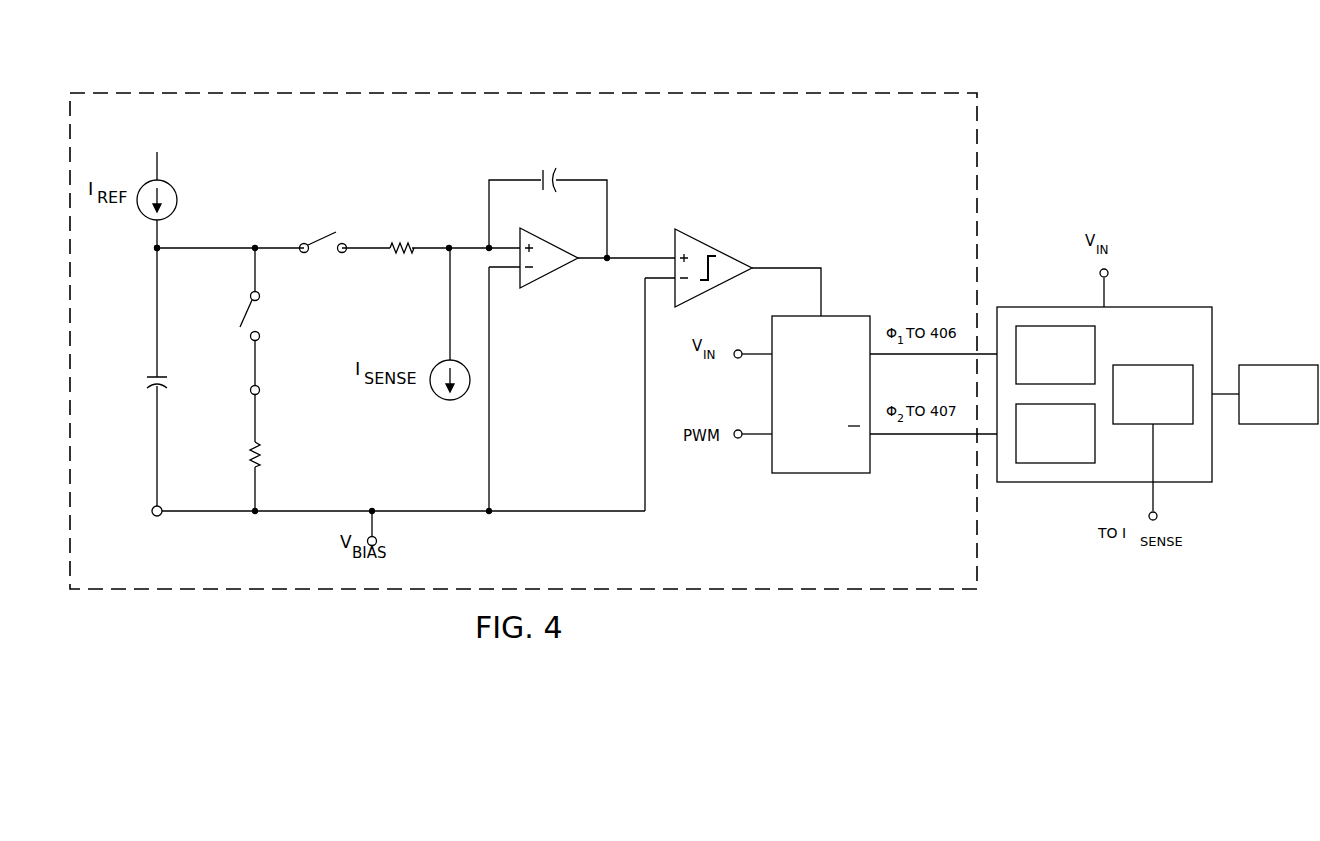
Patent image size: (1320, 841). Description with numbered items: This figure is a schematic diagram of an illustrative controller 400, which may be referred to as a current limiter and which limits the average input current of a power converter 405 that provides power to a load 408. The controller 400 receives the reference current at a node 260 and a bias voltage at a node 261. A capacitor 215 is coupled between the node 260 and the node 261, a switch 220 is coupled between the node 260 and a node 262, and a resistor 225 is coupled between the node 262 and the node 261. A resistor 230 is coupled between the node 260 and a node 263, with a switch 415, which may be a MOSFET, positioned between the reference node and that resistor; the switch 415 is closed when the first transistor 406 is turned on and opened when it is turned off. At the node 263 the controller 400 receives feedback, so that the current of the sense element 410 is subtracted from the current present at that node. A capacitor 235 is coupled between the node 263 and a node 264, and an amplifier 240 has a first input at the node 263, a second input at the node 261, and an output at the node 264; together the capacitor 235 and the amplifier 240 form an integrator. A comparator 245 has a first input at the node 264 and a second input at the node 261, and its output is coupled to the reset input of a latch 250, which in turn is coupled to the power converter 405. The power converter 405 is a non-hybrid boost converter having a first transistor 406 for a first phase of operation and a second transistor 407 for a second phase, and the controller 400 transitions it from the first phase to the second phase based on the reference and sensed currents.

The controller 400 is at (325, 91).
The switch 415 is at (322, 238).
The resistor 230 is at (397, 243).
The node 263 is at (449, 242).
The capacitor 235 is at (548, 172).
The amplifier 240 is at (548, 243).
The node 264 is at (609, 253).
The comparator 245 is at (715, 252).
The latch 250 is at (838, 407).
The node 260 is at (155, 252).
The switch 220 is at (245, 314).
The capacitor 215 is at (148, 378).
The node 262 is at (249, 391).
The resistor 225 is at (251, 453).
The node 261 is at (152, 516).
The power converter 405 is at (1104, 365).
The first transistor 406 is at (1073, 368).
The second transistor 407 is at (1073, 447).
The sense element 410 is at (1170, 408).
The load 408 is at (1296, 408).